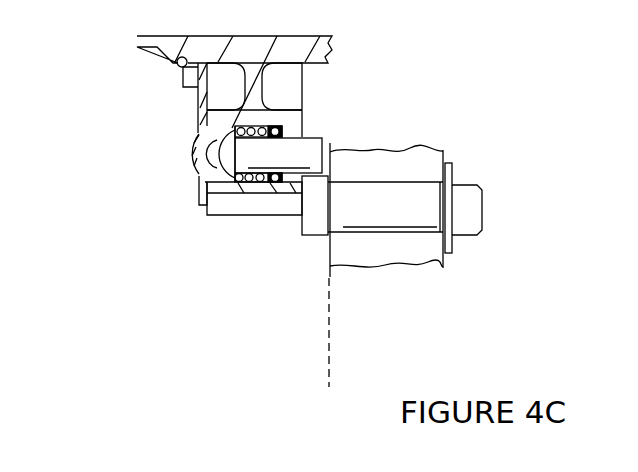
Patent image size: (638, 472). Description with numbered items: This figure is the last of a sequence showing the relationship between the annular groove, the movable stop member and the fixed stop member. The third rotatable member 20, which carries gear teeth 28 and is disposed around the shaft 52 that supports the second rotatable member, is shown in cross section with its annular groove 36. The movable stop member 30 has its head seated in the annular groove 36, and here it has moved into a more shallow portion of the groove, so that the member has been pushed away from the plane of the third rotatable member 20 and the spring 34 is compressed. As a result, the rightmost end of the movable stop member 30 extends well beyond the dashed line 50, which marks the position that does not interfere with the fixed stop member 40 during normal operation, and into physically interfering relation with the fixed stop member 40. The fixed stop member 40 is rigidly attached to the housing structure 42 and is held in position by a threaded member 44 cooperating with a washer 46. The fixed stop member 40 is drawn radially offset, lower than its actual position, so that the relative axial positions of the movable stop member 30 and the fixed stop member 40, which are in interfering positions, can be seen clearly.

The third rotatable member 20 is at (200, 94).
The gear teeth 28 is at (201, 207).
The movable stop member 30 is at (220, 157).
The spring 34 is at (282, 131).
The annular groove 36 is at (198, 157).
The fixed stop member 40 is at (350, 218).
The housing structure 42 is at (422, 253).
The threaded member 44 is at (483, 208).
The washer 46 is at (452, 173).
The dashed line 50 is at (329, 373).
The shaft 52 is at (290, 47).